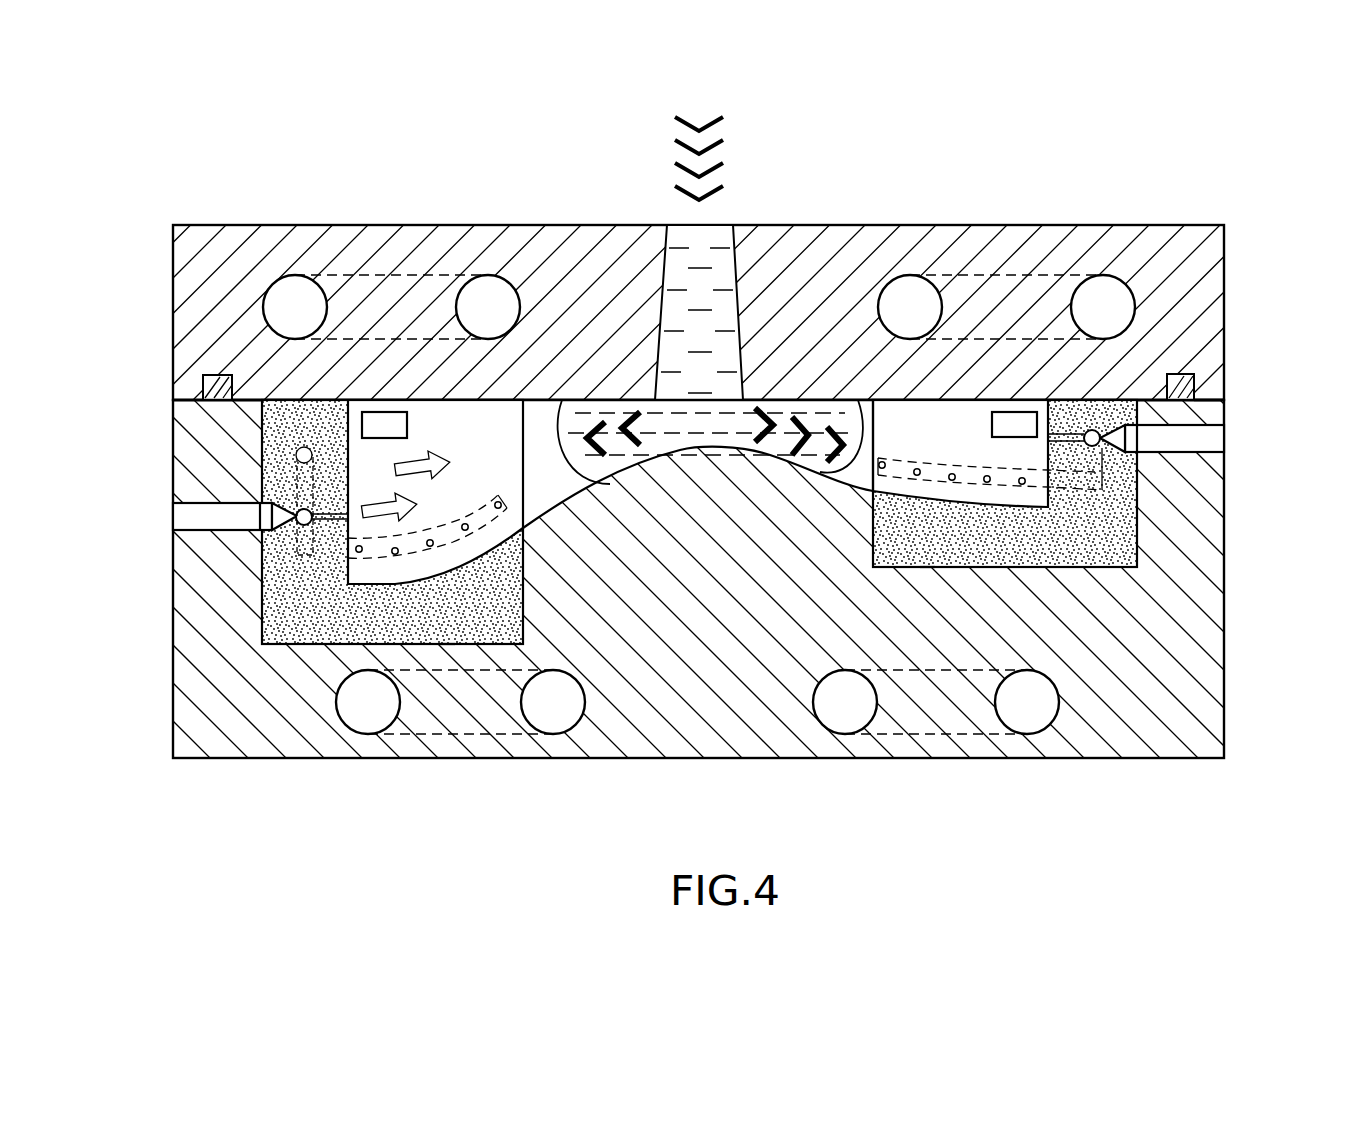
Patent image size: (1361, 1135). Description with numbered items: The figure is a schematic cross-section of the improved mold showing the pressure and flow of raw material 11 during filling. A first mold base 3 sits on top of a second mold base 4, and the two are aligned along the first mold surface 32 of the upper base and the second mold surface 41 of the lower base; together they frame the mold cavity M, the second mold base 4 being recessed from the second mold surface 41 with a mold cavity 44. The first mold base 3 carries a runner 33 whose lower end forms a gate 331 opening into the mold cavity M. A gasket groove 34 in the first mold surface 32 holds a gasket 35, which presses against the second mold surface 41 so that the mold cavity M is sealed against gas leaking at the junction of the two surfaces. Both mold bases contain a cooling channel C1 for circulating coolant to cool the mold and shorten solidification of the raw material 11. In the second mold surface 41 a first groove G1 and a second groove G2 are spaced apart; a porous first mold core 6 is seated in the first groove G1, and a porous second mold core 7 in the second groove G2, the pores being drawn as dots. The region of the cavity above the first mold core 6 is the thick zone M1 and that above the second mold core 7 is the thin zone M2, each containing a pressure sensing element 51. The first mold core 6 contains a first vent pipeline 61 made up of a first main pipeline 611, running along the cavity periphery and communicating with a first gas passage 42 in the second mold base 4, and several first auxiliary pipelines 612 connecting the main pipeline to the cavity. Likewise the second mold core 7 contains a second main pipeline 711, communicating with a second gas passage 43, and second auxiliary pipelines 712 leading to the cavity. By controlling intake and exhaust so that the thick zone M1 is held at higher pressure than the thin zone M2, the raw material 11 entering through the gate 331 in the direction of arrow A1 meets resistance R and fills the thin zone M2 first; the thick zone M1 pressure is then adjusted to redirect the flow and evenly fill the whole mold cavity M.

The first mold base 3 is at (197, 295).
The first mold surface 32 is at (250, 400).
The runner 33 is at (700, 412).
The gate 331 is at (710, 308).
The gasket groove 34 is at (1177, 398).
The gasket 35 is at (1197, 398).
The second mold base 4 is at (205, 740).
The second mold surface 41 is at (250, 400).
The first gas passage 42 is at (197, 518).
The second gas passage 43 is at (1210, 437).
The mold cavity 44 is at (378, 455).
The pressure sensing element 51 is at (380, 412).
The first mold core 6 is at (392, 626).
The first vent pipeline 61 is at (266, 573).
The first main pipeline 611 is at (340, 517).
The first auxiliary pipeline 612 is at (357, 549).
The second mold core 7 is at (1117, 628).
The second main pipeline 711 is at (1095, 472).
The second auxiliary pipeline 712 is at (1175, 541).
The raw material 11 is at (845, 408).
The mold cavity M is at (863, 425).
The thick zone M1 is at (498, 450).
The thin zone M2 is at (983, 447).
The direction of arrow A1 is at (583, 425).
The resistance R is at (418, 457).
The cooling channel C1 is at (290, 292).
The first groove G1 is at (447, 645).
The second groove G2 is at (928, 567).